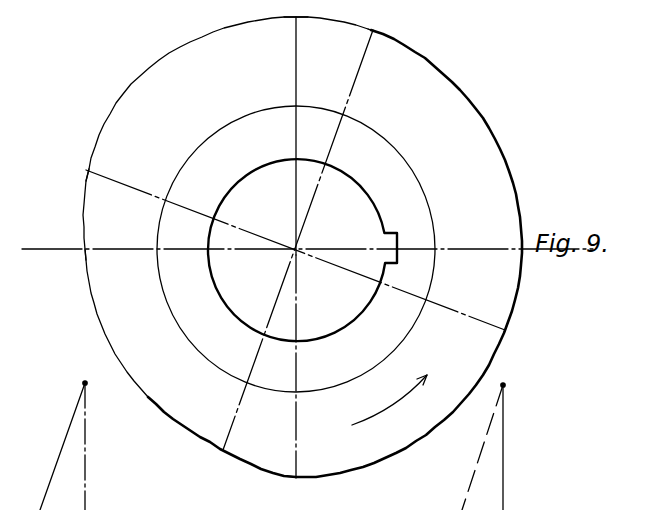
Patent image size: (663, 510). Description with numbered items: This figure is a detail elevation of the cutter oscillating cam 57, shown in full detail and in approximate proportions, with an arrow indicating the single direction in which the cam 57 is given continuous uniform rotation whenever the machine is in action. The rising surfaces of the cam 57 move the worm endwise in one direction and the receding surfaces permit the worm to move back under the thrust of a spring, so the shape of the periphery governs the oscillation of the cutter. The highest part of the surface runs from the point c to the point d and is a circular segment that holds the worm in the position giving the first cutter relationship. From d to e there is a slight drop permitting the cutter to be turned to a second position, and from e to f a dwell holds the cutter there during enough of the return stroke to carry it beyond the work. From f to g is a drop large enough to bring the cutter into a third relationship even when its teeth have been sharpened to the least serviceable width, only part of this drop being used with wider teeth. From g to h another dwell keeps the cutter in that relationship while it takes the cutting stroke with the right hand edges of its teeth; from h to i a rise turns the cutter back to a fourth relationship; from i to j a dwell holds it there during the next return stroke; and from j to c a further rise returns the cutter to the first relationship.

The cutter oscillating cam 57 is at (440, 148).
The point on cam surface j is at (295, 17).
The point on cam surface c is at (373, 30).
The point on cam surface d is at (522, 249).
The point on cam surface e is at (505, 330).
The point on cam surface f is at (296, 479).
The point on cam surface g is at (223, 450).
The point on cam surface h is at (86, 251).
The point on cam surface i is at (86, 170).